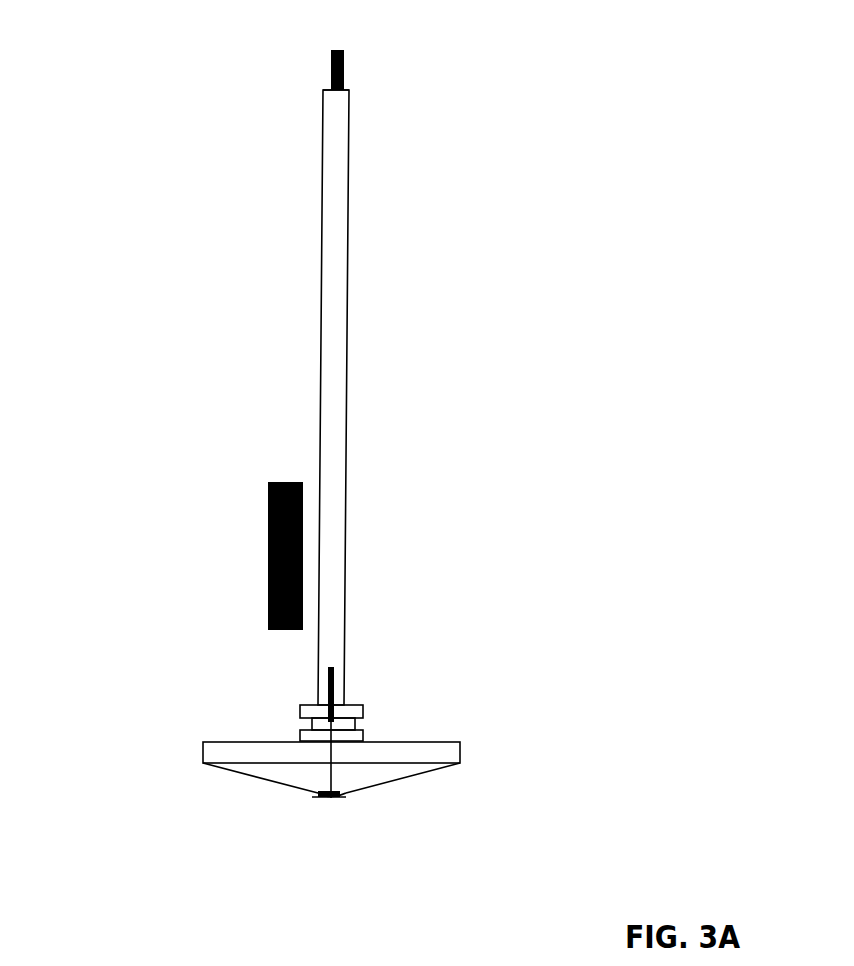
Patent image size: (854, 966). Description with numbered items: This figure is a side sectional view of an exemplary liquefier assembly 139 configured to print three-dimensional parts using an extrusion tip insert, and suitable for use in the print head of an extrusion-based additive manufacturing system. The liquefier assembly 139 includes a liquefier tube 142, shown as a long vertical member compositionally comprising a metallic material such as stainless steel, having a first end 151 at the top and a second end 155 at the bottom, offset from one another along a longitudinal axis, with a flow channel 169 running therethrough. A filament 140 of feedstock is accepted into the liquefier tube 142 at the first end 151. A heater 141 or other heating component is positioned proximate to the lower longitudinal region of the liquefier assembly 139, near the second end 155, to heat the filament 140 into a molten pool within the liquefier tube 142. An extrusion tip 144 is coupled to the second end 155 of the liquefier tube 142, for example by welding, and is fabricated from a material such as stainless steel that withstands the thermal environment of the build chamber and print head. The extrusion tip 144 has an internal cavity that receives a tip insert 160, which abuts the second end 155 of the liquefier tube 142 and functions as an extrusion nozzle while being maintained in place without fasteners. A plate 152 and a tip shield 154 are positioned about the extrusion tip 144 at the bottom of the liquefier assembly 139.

The liquefier assembly 139 is at (120, 63).
The filament 140 is at (343, 67).
The heater 141 is at (268, 537).
The liquefier tube 142 is at (347, 275).
The extrusion tip 144 is at (363, 708).
The first end 151 is at (307, 100).
The plate 152 is at (461, 742).
The tip shield 154 is at (462, 759).
The second end 155 is at (288, 690).
The tip insert 160 is at (323, 803).
The flow channel 169 is at (337, 665).